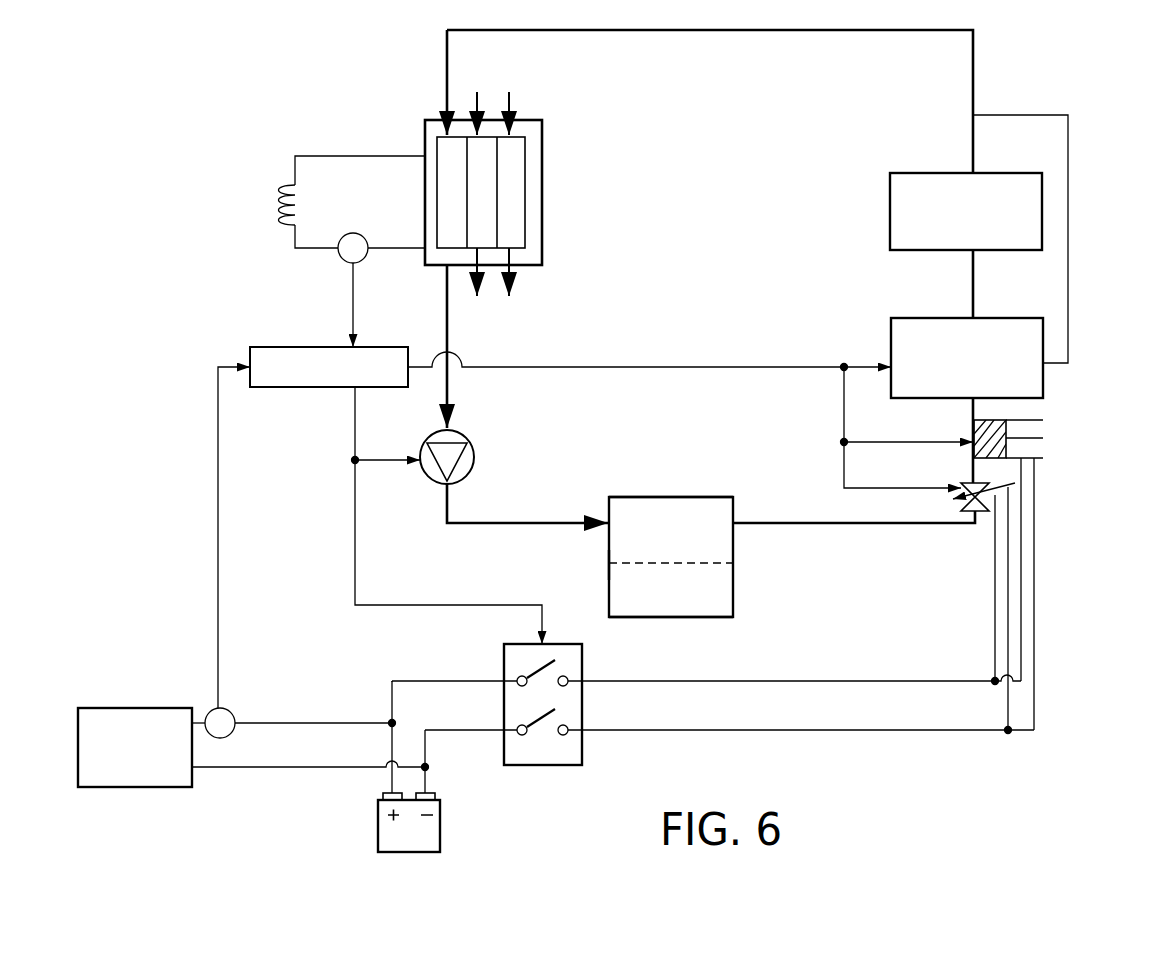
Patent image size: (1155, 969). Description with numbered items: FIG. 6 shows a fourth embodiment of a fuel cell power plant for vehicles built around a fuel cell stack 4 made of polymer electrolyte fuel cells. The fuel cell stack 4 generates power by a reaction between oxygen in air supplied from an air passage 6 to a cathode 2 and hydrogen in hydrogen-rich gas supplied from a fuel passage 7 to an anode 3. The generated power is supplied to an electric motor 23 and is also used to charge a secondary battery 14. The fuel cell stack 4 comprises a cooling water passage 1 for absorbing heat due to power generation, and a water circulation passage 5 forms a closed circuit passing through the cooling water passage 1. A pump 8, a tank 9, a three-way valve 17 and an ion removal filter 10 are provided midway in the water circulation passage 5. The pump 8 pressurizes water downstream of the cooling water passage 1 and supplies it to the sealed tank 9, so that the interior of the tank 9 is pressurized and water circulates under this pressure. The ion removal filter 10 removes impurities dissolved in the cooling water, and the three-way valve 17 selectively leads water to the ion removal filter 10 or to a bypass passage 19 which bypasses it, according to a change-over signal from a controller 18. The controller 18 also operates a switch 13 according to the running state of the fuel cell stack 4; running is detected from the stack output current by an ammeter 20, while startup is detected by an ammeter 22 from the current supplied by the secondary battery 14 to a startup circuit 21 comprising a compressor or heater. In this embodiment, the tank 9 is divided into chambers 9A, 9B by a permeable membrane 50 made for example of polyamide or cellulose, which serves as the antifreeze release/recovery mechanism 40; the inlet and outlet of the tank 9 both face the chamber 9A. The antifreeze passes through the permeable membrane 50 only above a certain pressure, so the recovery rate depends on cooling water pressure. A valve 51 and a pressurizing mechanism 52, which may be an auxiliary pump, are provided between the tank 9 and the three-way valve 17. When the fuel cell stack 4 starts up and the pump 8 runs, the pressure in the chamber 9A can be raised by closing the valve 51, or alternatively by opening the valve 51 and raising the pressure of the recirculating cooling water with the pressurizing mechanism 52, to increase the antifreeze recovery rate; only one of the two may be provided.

The cooling water passage 1 is at (446, 190).
The cathode 2 is at (485, 167).
The anode 3 is at (518, 226).
The fuel cell stack 4 is at (543, 196).
The water circulation passage 5 is at (975, 55).
The air passage 6 is at (476, 99).
The fuel passage 7 is at (508, 99).
The pump 8 is at (475, 456).
The tank 9 is at (720, 497).
The chamber 9A is at (720, 538).
The chamber 9B is at (720, 586).
The ion removal filter 10 is at (910, 172).
The switch 13 is at (585, 668).
The secondary battery 14 is at (442, 815).
The three-way valve 17 is at (891, 333).
The controller 18 is at (370, 342).
The bypass passage 19 is at (1068, 143).
The ammeter 20 is at (340, 265).
The startup circuit 21 is at (156, 690).
The ammeter 22 is at (235, 712).
The electric motor 23 is at (276, 210).
The antifreeze release/recovery mechanism 40 is at (605, 570).
The permeable membrane 50 is at (630, 563).
The valve 51 is at (968, 504).
The pressurizing mechanism 52 is at (1030, 418).